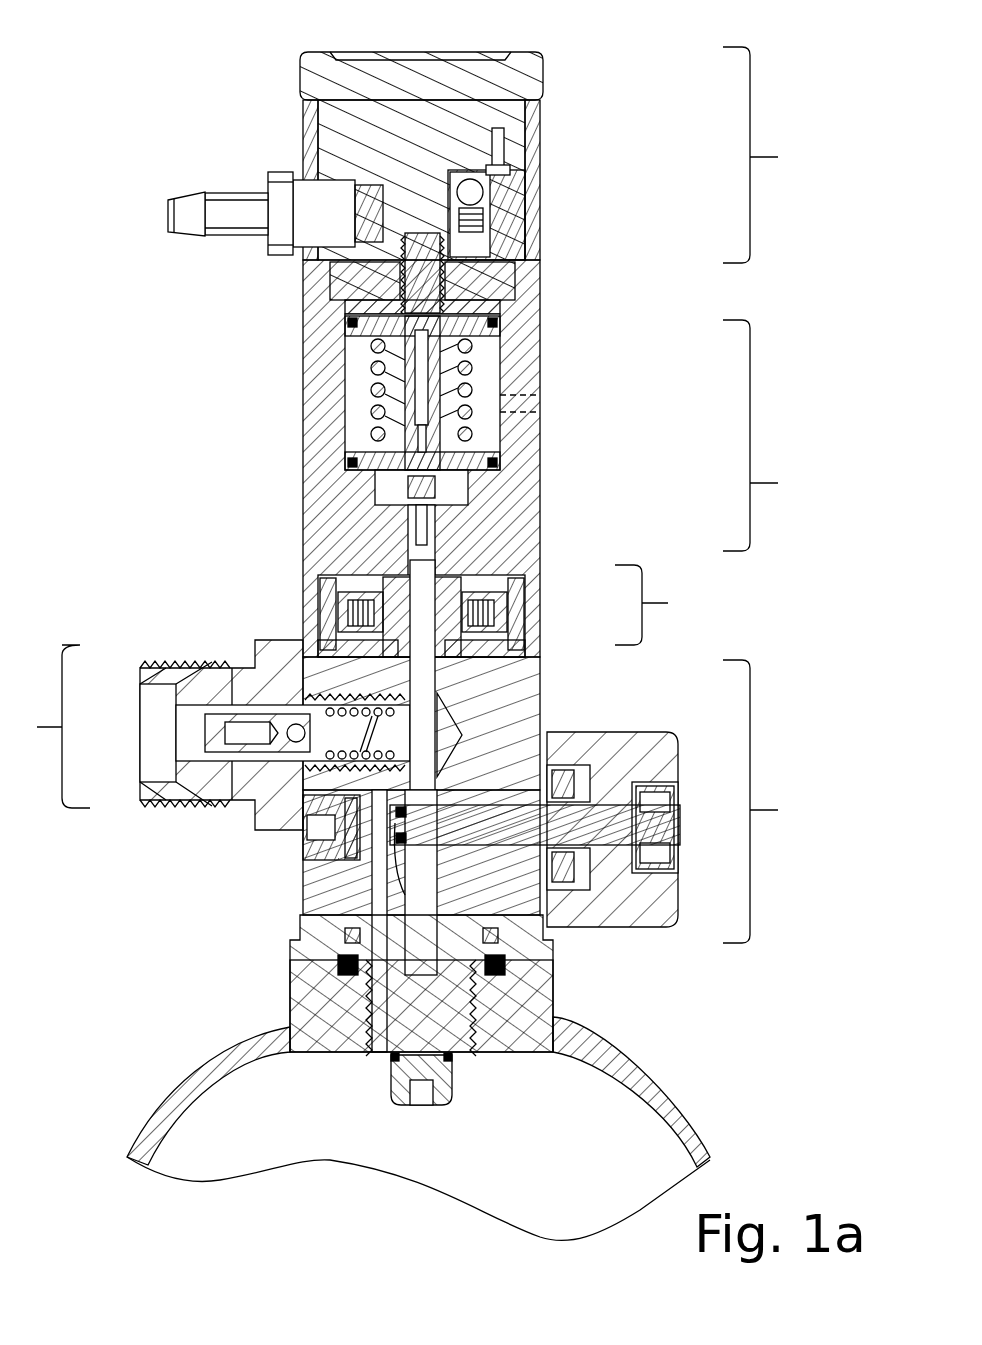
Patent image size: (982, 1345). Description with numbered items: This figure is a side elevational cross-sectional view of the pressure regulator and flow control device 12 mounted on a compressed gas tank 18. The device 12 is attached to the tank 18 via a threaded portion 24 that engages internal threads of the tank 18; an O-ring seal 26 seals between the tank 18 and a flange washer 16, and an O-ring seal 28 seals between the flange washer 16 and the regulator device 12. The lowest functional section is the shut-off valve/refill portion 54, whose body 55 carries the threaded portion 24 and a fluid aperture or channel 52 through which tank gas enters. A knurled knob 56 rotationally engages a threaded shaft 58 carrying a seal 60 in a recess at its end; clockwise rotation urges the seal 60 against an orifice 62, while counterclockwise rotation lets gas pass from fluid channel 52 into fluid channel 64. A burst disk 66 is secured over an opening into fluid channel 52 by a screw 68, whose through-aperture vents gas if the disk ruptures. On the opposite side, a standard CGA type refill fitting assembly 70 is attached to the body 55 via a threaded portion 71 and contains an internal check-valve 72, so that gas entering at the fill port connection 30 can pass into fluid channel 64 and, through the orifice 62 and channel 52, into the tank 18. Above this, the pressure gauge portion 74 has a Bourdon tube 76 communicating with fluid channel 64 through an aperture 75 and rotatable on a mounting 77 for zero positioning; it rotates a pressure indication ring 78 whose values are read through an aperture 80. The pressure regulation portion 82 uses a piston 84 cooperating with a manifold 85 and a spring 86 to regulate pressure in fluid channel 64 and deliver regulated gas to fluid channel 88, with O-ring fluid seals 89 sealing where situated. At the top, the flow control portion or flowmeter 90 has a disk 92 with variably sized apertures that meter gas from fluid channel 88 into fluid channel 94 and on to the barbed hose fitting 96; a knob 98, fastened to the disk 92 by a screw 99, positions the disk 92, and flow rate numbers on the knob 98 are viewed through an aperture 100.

The pressure regulator and flow control device 12 is at (108, 186).
The flange washer 16 is at (340, 935).
The tank 18 is at (665, 1085).
The threaded portion 24 is at (478, 1052).
The O-ring seal 26 is at (300, 990).
The O-ring seal 28 is at (333, 965).
The fill port connection 30 is at (176, 808).
The fluid aperture or channel 52 is at (378, 1060).
The shut-off valve/refill portion 54 is at (774, 801).
The body 55 is at (340, 893).
The knurled knob 56 is at (658, 733).
The threaded shaft 58 is at (588, 798).
The seal 60 is at (535, 862).
The orifice 62 is at (332, 880).
The fluid channel 64 is at (500, 712).
The burst disk 66 is at (300, 857).
The screw 68 is at (305, 843).
The refill fitting assembly 70 is at (152, 735).
The threaded portion 71 is at (322, 705).
The internal check-valve 72 is at (226, 712).
The pressure gauge portion 74 is at (525, 611).
The aperture 75 is at (405, 522).
The Bourdon tube 76 is at (525, 667).
The mounting 77 is at (395, 596).
The pressure indication ring 78 is at (328, 598).
The aperture 80 is at (496, 613).
The pressure regulation portion 82 is at (564, 458).
The piston 84 is at (442, 382).
The manifold 85 is at (470, 472).
The spring 86 is at (370, 411).
The fluid channel 88 is at (545, 270).
The O-ring fluid seals 89 is at (350, 326).
The flow control portion or flowmeter 90 is at (774, 155).
The disk 92 is at (400, 310).
The fluid channel 94 is at (302, 255).
The barbed hose fitting 96 is at (248, 193).
The knob 98 is at (545, 72).
The screw 99 is at (478, 252).
The aperture 100 is at (540, 160).